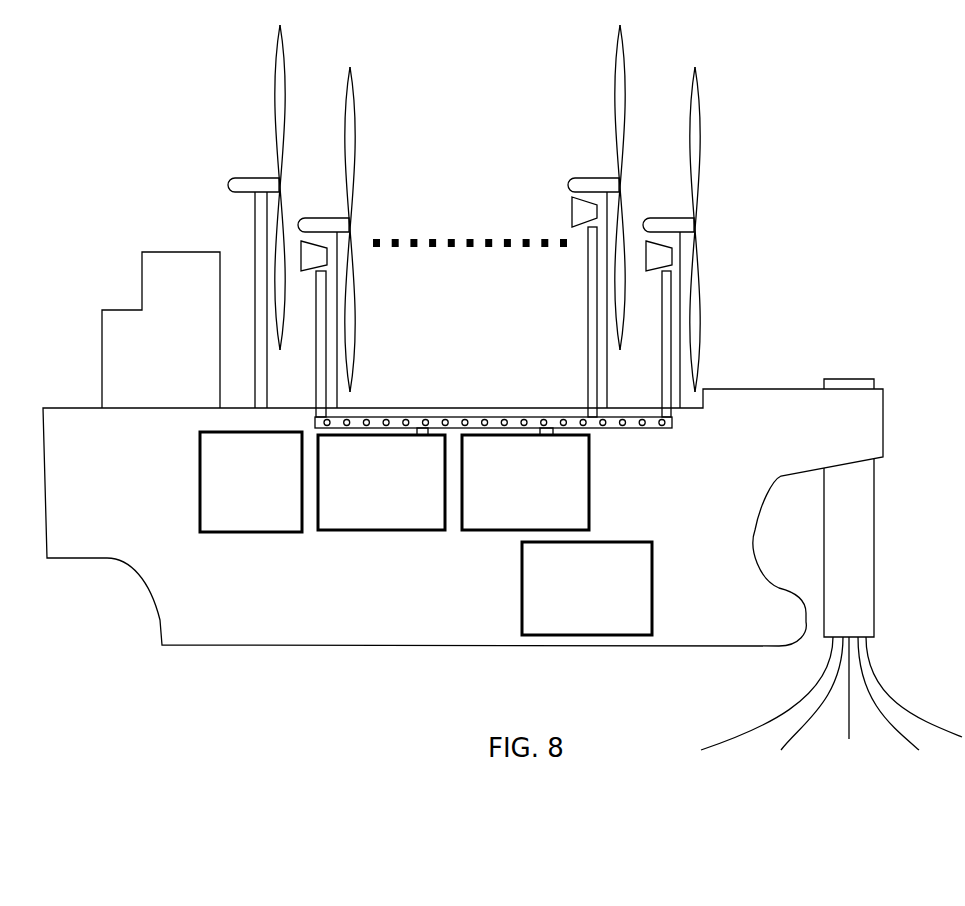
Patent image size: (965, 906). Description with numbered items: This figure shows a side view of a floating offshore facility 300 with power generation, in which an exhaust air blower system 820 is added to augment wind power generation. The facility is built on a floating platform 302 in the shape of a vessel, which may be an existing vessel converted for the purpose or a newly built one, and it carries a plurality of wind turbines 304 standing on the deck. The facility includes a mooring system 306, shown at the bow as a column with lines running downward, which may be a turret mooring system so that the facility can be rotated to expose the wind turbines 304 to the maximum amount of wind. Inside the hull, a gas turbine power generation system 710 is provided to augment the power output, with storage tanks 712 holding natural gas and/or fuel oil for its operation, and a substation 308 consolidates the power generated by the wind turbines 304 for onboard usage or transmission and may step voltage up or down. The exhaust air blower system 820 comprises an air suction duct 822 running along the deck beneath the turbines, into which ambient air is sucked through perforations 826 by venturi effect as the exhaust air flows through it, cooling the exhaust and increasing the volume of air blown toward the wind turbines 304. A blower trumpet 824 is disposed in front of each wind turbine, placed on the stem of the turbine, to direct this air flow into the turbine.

The floating offshore facility 300 is at (868, 147).
The floating platform 302 is at (772, 403).
The wind turbines 304 is at (700, 105).
The mooring system 306 is at (865, 521).
The substation 308 is at (587, 588).
The gas turbine power generation system 710 is at (453, 482).
The storage tanks 712 is at (251, 482).
The exhaust air blower system 820 is at (577, 387).
The air suction duct 822 is at (393, 417).
The blower trumpet 824 is at (580, 212).
The perforations 826 is at (457, 421).